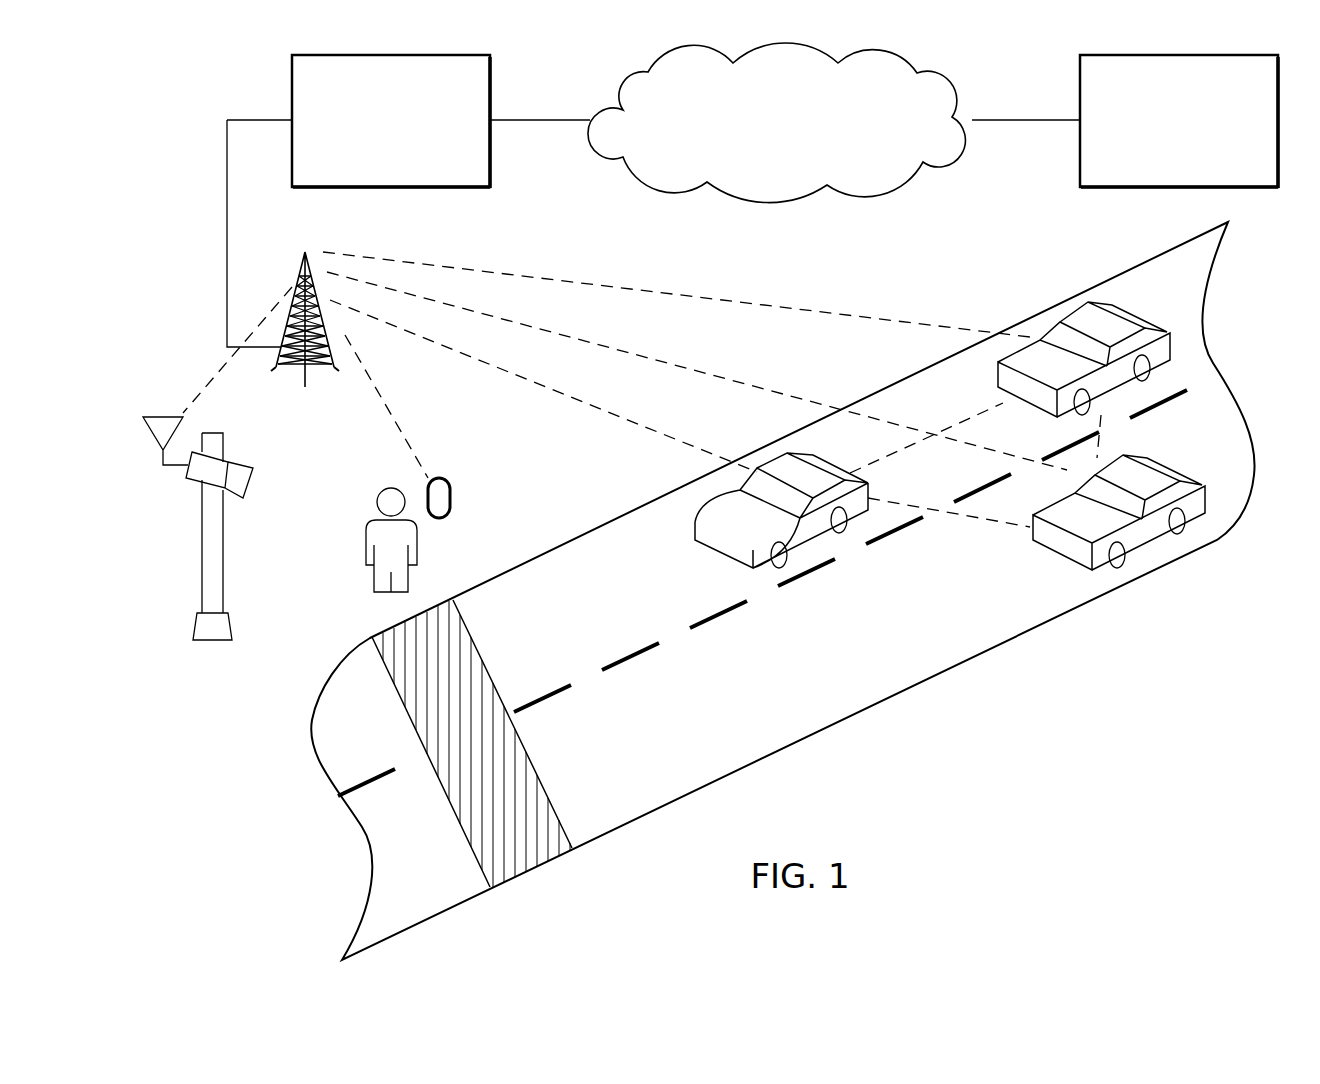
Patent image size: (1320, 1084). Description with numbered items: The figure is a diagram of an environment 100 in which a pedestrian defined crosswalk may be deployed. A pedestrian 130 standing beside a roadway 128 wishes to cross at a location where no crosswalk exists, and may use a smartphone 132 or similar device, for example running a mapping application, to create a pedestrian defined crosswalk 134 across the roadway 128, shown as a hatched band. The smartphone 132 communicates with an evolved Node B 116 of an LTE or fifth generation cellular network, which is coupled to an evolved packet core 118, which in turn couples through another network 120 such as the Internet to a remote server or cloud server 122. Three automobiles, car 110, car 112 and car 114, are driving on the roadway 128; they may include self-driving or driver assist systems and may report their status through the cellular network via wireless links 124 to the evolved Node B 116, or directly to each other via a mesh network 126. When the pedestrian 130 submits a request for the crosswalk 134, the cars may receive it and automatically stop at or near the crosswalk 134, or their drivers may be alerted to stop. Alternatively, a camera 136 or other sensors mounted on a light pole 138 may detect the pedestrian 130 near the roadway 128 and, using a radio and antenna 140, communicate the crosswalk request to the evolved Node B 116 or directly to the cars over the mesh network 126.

The environment 100 is at (1211, 807).
The car 110 is at (1057, 322).
The car 112 is at (695, 528).
The car 114 is at (1060, 548).
The evolved Node B (eNB) 116 is at (290, 365).
The evolved packet core (EPC) 118 is at (438, 157).
The network 120 is at (848, 131).
The remote server or cloud server 122 is at (1270, 143).
The wireless links 124 is at (672, 433).
The mesh network 126 is at (990, 410).
The roadway 128 is at (824, 697).
The pedestrian 130 is at (368, 530).
The smartphone 132 is at (452, 487).
The pedestrian defined crosswalk 134 is at (487, 668).
The camera 136 is at (238, 462).
The light pole 138 is at (203, 580).
The radio and antenna 140 is at (160, 415).